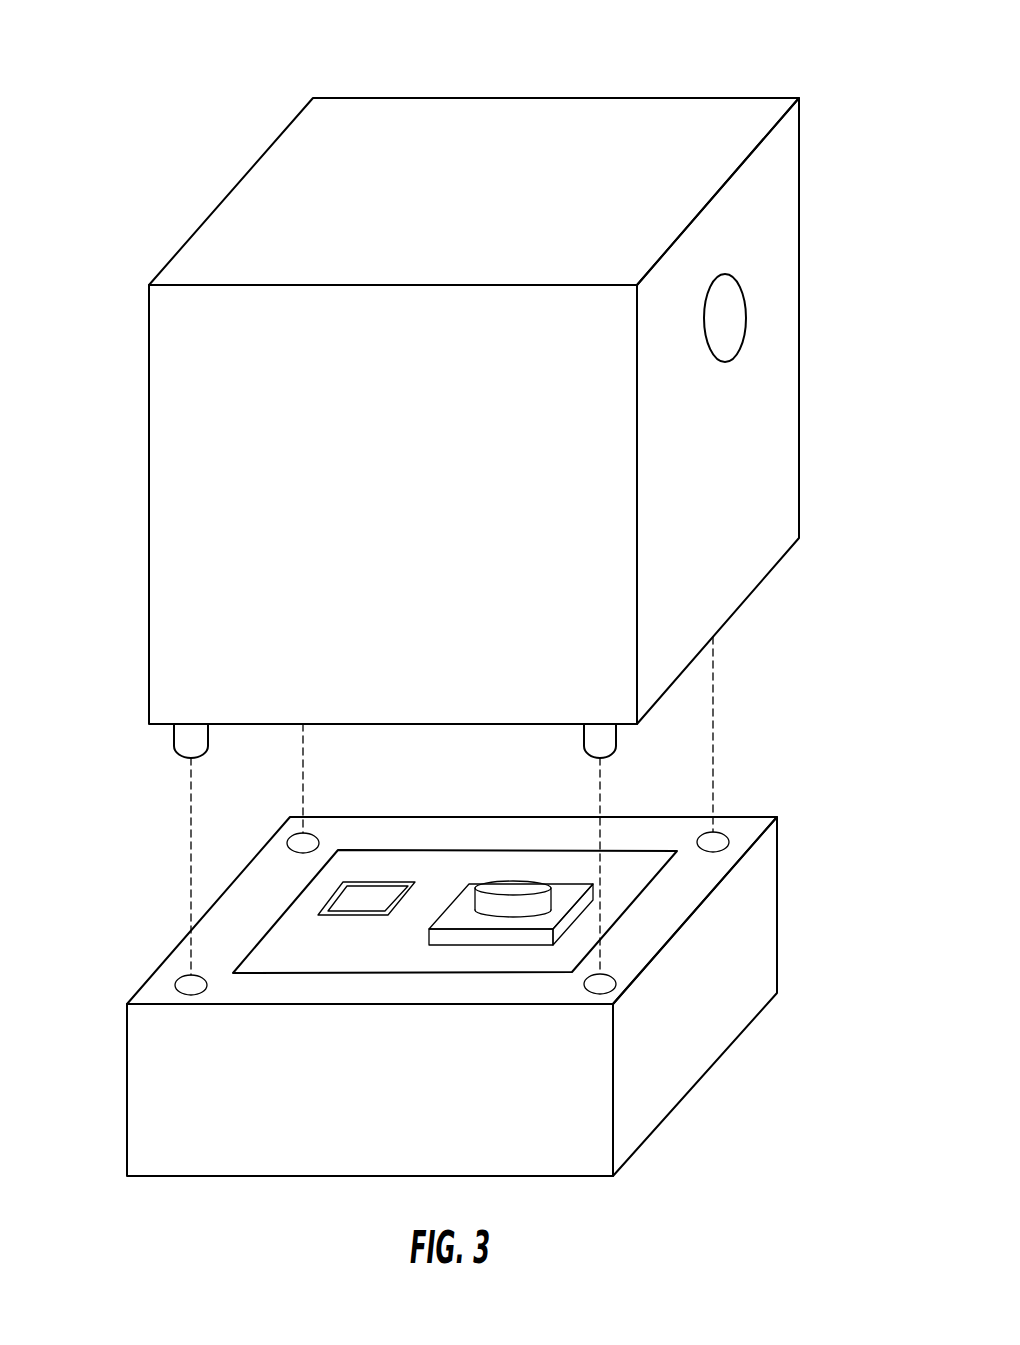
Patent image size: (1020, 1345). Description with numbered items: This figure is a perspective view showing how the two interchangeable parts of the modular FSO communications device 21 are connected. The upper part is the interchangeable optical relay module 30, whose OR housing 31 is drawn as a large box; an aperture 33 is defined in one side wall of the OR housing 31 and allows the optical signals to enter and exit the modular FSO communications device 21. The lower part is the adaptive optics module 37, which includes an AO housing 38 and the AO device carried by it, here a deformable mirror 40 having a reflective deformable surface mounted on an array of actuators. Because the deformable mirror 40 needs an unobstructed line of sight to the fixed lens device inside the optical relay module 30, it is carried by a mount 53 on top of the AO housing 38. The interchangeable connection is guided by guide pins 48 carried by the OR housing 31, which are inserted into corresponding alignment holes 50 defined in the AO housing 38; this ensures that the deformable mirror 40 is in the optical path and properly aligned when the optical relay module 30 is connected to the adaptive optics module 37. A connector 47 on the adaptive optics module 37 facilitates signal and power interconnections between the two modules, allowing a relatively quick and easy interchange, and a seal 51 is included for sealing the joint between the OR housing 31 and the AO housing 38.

The modular FSO communications device 21 is at (516, 362).
The interchangeable optical relay module 30 is at (472, 362).
The OR housing 31 is at (788, 490).
The aperture 33 is at (747, 312).
The guide pins 48 is at (173, 741).
The adaptive optics module 37 is at (448, 906).
The AO housing 38 is at (685, 1058).
The alignment holes 50 is at (733, 840).
The seal 51 is at (267, 935).
The connector 47 is at (330, 893).
The mount 53 is at (578, 915).
The deformable mirror 40 is at (552, 898).